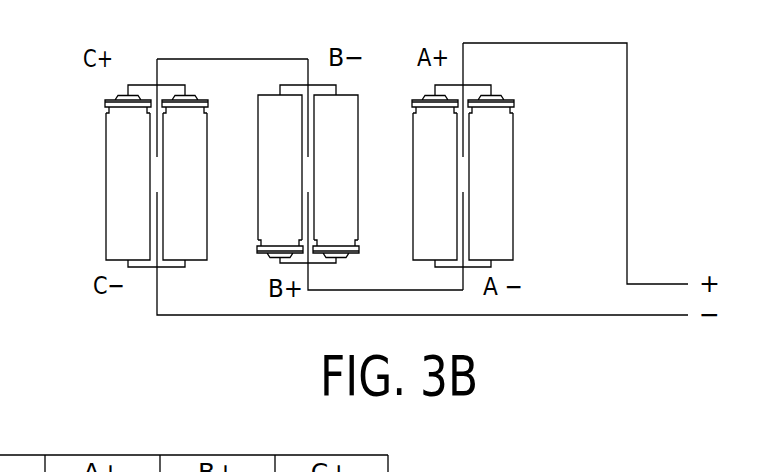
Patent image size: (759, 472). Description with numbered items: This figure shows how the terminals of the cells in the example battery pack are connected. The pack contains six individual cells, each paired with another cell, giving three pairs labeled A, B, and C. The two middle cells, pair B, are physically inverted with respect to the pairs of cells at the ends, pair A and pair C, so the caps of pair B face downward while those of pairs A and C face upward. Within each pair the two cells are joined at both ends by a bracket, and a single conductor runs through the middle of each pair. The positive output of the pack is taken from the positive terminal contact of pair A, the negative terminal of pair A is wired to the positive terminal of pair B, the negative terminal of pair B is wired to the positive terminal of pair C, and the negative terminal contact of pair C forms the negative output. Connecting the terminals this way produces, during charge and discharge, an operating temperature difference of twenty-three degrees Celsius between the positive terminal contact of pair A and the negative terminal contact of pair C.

The cell pair A is at (463, 178).
The cell pair B is at (308, 176).
The cell pair C is at (156, 178).